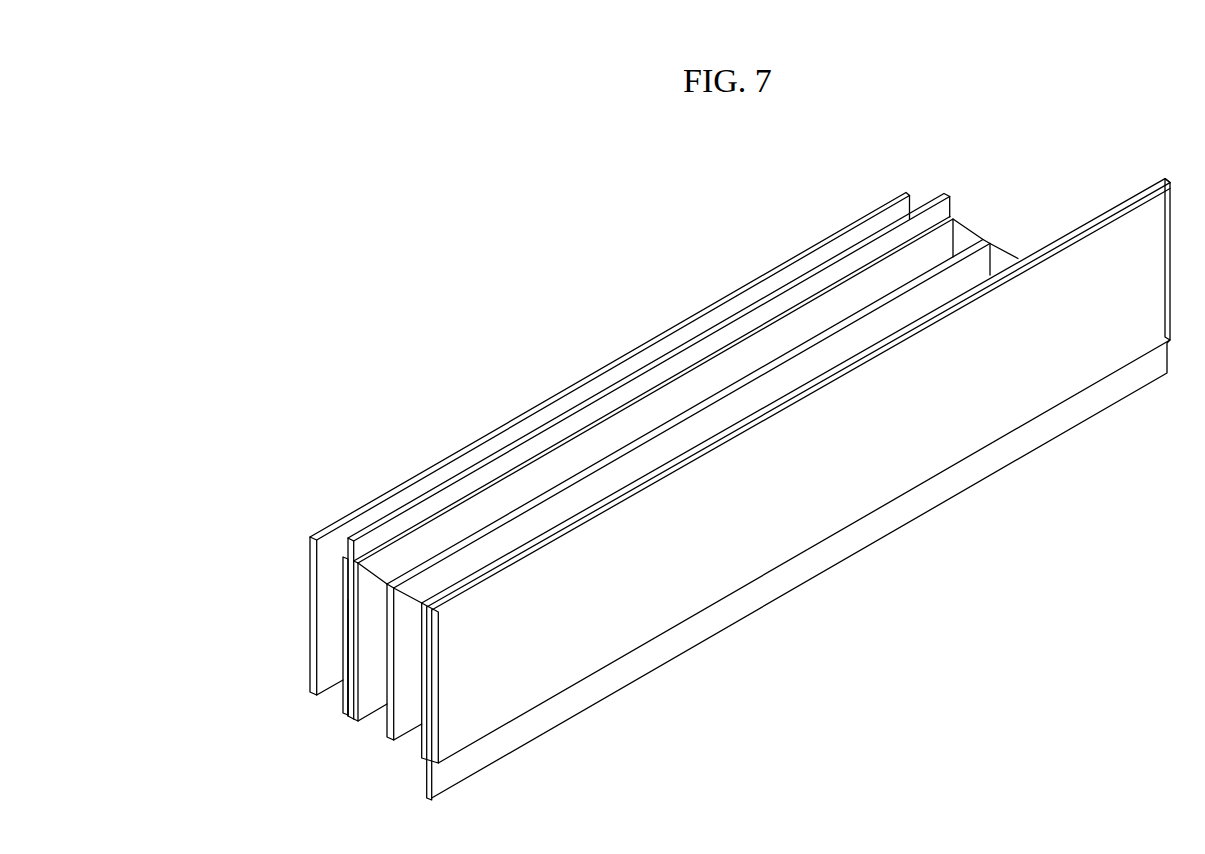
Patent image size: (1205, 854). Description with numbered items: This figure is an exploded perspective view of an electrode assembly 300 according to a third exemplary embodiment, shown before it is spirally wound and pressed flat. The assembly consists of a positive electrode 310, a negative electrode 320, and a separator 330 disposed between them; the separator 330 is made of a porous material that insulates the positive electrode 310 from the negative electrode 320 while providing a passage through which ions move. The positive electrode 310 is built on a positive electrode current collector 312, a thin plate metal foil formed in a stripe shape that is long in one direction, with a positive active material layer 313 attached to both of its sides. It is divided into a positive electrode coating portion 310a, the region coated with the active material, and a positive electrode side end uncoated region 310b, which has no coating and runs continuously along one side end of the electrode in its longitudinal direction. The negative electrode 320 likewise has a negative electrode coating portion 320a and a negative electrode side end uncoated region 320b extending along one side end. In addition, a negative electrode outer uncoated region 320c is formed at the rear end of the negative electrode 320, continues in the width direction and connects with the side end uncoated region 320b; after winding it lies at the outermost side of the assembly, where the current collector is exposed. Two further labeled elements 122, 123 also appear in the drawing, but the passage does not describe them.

The electrode assembly 300 is at (662, 166).
The positive electrode 310 is at (632, 467).
The positive electrode coating portion 310a is at (566, 462).
The positive electrode side end uncoated region 310b is at (632, 388).
The positive electrode current collector 312 is at (348, 702).
The positive active material layer 313 is at (358, 642).
The negative electrode 320 is at (796, 464).
The negative electrode coating portion 320a is at (850, 490).
The negative electrode side end uncoated region 320b is at (752, 600).
The negative electrode outer uncoated region 320c is at (1129, 196).
The separator 330 is at (456, 462).
The first electrode lead 122 is at (911, 328).
The second electrode lead 123 is at (822, 385).